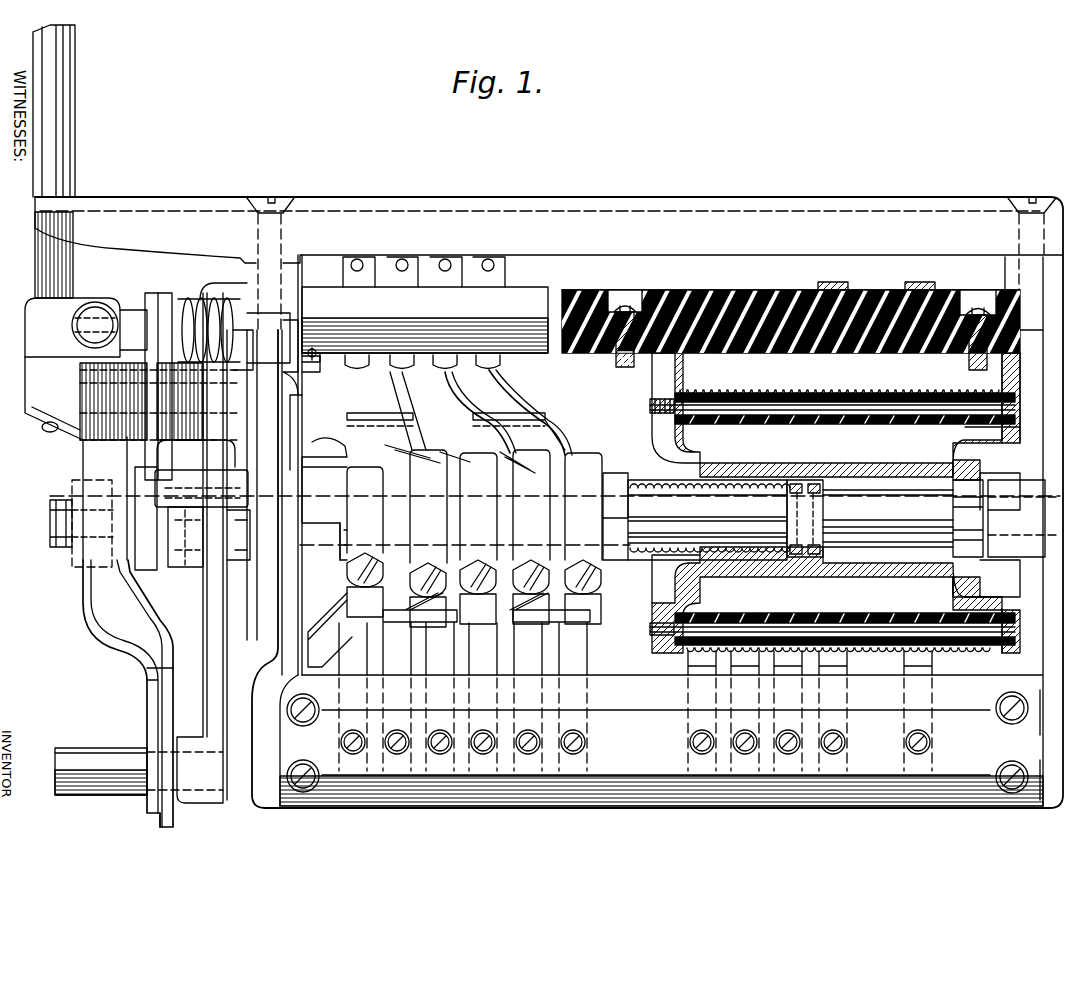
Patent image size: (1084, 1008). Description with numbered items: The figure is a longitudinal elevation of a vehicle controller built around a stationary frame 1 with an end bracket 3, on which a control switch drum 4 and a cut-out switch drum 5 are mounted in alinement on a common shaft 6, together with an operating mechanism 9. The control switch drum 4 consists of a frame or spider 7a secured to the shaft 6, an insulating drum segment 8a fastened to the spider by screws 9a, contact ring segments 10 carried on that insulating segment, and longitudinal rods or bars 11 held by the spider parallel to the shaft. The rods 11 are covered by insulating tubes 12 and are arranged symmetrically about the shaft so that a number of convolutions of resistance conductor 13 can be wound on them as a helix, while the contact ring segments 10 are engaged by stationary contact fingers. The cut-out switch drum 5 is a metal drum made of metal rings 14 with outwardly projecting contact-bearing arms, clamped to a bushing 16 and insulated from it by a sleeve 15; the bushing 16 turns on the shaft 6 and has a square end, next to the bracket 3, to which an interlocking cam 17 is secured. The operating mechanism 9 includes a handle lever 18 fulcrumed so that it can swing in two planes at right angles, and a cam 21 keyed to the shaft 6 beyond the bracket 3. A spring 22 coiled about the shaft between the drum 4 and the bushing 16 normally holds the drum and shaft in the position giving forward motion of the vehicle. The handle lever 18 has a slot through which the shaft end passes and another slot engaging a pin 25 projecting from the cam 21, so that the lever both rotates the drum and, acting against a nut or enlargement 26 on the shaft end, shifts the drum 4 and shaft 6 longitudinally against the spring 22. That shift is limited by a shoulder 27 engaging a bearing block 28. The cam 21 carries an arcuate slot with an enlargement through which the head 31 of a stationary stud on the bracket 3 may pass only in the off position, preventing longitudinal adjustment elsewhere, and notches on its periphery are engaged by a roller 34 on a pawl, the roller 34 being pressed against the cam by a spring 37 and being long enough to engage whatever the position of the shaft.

The stationary frame 1 is at (497, 198).
The end bracket 3 is at (256, 630).
The control switch drum 4 is at (795, 311).
The cut-out switch drum 5 is at (538, 410).
The shaft 6 is at (790, 520).
The frame or spider 7a is at (948, 456).
The insulating drum segment 8a is at (713, 290).
The operating mechanism 9 is at (127, 302).
The screws 9a is at (640, 305).
The contact ring segments 10 is at (905, 283).
The longitudinal rods or bars 11 is at (853, 395).
The insulating tubes 12 is at (882, 422).
The resistance conductor 13 is at (803, 392).
The metal rings 14 is at (440, 432).
The insulating sleeve 15 is at (615, 472).
The bushing 16 is at (628, 560).
The interlocking cam 17 is at (320, 436).
The handle lever 18 is at (76, 180).
The cam 21 is at (212, 601).
The spring 22 is at (684, 556).
The pin 25 is at (92, 748).
The nut or enlargement 26 is at (72, 562).
The shoulder 27 is at (987, 524).
The bearing block 28 is at (1006, 518).
The head of stationary stud 31 is at (190, 553).
The roller 34 is at (176, 480).
The spring 37 is at (185, 300).